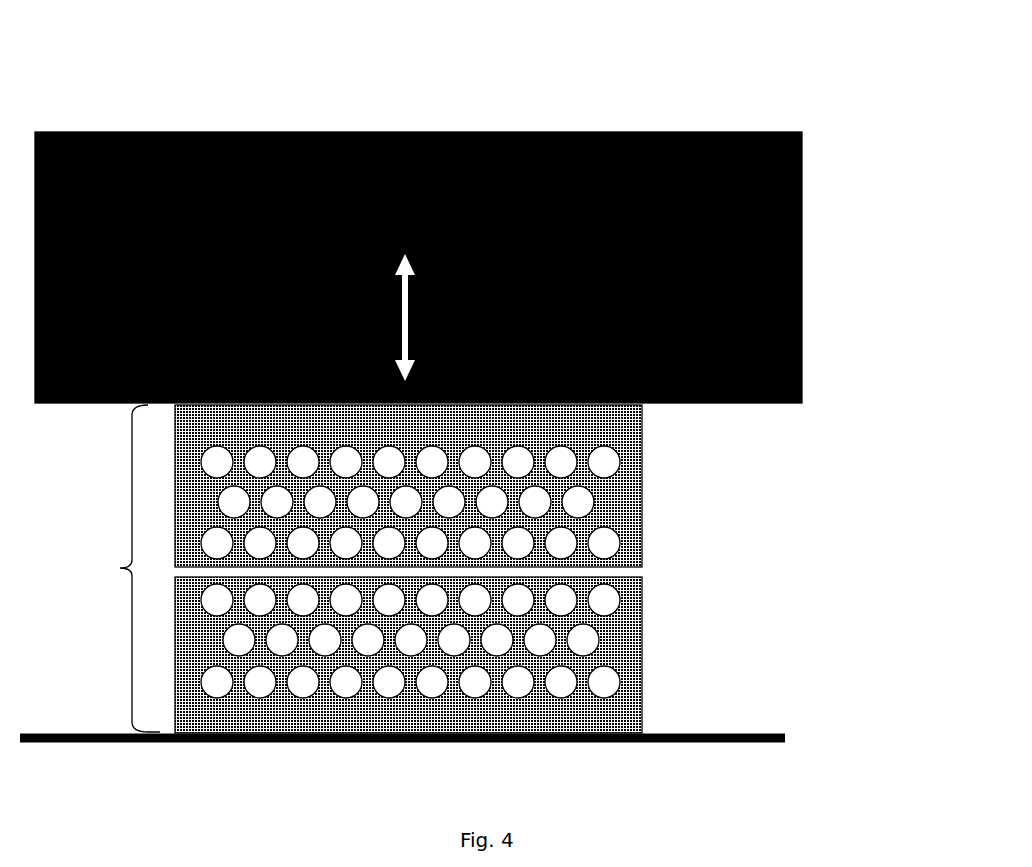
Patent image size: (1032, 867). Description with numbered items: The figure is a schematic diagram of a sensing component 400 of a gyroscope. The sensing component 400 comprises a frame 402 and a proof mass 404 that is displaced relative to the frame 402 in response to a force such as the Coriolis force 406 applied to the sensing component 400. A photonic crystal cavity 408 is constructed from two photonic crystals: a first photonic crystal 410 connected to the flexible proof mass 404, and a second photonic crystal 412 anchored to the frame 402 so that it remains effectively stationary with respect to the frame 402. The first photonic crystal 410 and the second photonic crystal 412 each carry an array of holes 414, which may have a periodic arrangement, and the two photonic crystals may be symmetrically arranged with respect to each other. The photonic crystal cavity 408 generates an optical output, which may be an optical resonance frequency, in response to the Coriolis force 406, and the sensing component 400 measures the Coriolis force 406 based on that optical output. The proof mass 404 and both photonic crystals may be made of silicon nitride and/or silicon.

The sensing component 400 is at (712, 93).
The frame 402 is at (783, 733).
The proof mass 404 is at (802, 245).
The Coriolis force 406 is at (400, 318).
The photonic crystal cavity 408 is at (120, 568).
The first photonic crystal 410 is at (643, 493).
The second photonic crystal 412 is at (643, 642).
The array of holes 414 is at (587, 635).